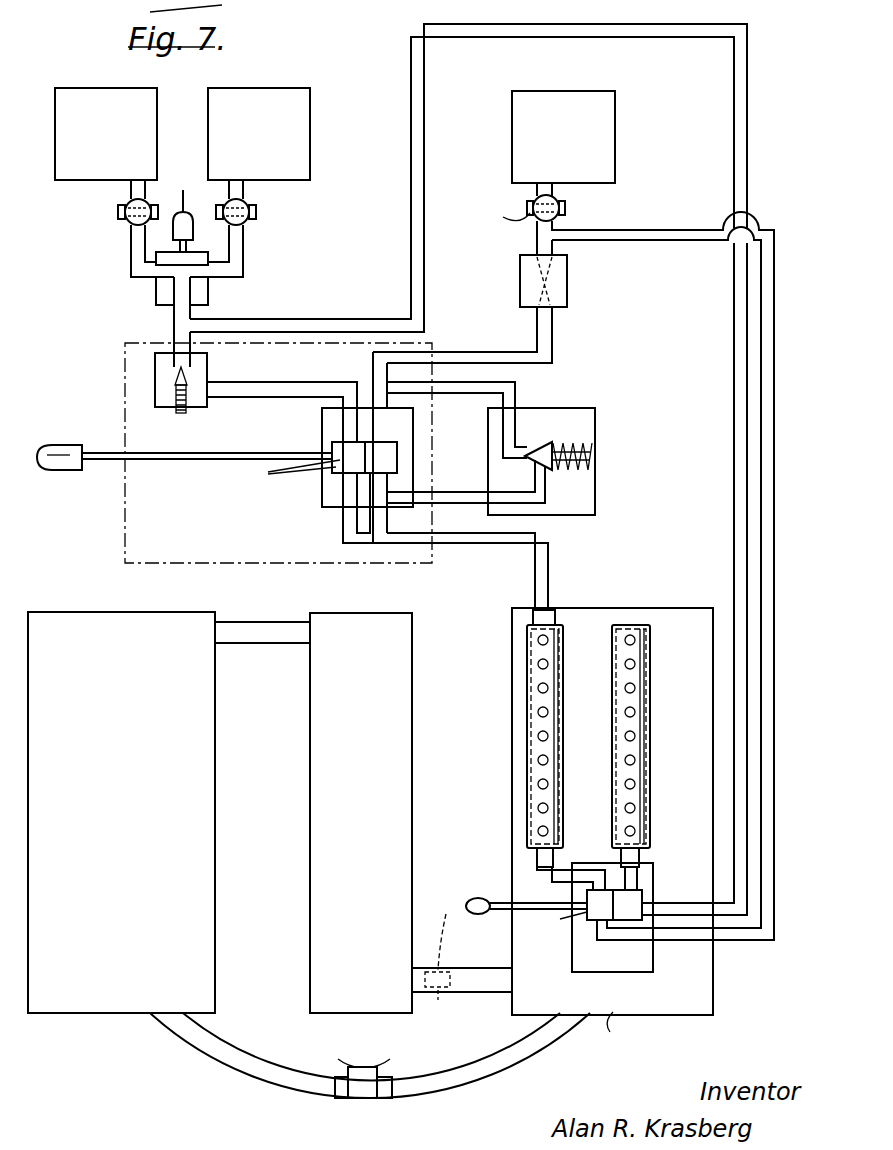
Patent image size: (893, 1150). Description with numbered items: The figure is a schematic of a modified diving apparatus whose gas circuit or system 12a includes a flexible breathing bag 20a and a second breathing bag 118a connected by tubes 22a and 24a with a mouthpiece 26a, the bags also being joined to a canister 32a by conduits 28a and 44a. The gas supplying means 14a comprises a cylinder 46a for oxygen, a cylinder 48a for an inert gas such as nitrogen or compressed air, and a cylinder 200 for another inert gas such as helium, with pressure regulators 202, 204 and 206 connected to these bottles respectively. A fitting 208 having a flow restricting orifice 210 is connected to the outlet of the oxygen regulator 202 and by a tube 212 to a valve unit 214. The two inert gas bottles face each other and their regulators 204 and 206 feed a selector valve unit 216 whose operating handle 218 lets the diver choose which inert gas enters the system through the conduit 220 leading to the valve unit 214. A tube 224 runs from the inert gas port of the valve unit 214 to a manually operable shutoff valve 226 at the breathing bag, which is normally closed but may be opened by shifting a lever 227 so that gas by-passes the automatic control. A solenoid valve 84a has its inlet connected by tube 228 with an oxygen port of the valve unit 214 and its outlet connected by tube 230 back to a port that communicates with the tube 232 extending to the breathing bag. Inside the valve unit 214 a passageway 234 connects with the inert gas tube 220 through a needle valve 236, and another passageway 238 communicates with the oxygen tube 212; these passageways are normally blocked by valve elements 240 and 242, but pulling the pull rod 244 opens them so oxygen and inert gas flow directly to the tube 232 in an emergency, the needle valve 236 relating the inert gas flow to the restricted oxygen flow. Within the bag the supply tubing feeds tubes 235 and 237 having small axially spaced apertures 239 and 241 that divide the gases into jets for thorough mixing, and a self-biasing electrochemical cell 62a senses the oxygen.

The cylinder 200 is at (84, 80).
The cylinder 48a is at (262, 97).
The operating handle 218 is at (179, 207).
The pressure regulator 206 is at (128, 223).
The pressure regulator 204 is at (250, 222).
The selector valve unit 216 is at (212, 306).
The conduit or tube 220 is at (173, 312).
The means for supplying oxygen and other gases 14a is at (500, 133).
The cylinder 46a is at (615, 126).
The tube or conduit 224 is at (420, 186).
The pressure regulator 202 is at (566, 210).
The fitting 208 is at (567, 272).
The flow restricting orifice 210 is at (567, 296).
The valve unit 214 is at (430, 338).
The tube 212 is at (552, 345).
The tube 228 is at (515, 390).
The needle valve 236 is at (175, 394).
The actuating member or pull rod 244 is at (180, 450).
The passageway 234 is at (266, 395).
The passageway 238 is at (388, 437).
The tube or conduit 230 is at (470, 480).
The valve element 240 is at (355, 458).
The valve element 242 is at (370, 480).
The solenoid valve 84a is at (592, 486).
The tube 232 is at (550, 558).
The flexible breathing bag 20a is at (57, 608).
The conduit 28a is at (232, 621).
The canister 32a is at (405, 740).
The breathing bag 118a is at (672, 608).
The gas circuit or system 12a is at (501, 640).
The tube 235 is at (527, 775).
The apertures 239 is at (540, 700).
The tube 237 is at (692, 742).
The apertures 241 is at (632, 668).
The lever 227 is at (530, 880).
The manually operable shutoff valve 226 is at (592, 928).
The electrochemical cell 62a is at (508, 927).
The conduit 44a is at (470, 968).
The mouthpiece 26a is at (363, 1064).
The tube 24a is at (226, 1068).
The tube 22a is at (490, 1080).